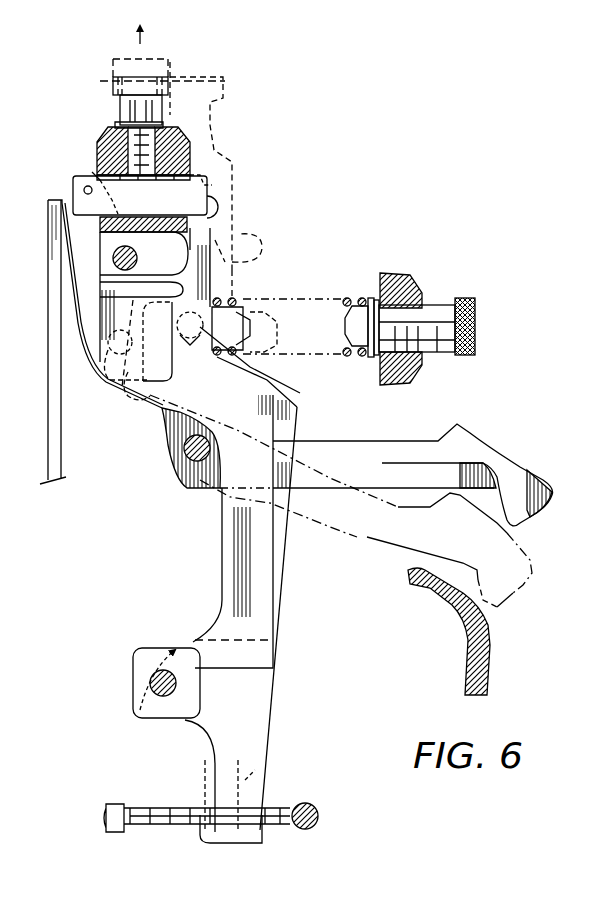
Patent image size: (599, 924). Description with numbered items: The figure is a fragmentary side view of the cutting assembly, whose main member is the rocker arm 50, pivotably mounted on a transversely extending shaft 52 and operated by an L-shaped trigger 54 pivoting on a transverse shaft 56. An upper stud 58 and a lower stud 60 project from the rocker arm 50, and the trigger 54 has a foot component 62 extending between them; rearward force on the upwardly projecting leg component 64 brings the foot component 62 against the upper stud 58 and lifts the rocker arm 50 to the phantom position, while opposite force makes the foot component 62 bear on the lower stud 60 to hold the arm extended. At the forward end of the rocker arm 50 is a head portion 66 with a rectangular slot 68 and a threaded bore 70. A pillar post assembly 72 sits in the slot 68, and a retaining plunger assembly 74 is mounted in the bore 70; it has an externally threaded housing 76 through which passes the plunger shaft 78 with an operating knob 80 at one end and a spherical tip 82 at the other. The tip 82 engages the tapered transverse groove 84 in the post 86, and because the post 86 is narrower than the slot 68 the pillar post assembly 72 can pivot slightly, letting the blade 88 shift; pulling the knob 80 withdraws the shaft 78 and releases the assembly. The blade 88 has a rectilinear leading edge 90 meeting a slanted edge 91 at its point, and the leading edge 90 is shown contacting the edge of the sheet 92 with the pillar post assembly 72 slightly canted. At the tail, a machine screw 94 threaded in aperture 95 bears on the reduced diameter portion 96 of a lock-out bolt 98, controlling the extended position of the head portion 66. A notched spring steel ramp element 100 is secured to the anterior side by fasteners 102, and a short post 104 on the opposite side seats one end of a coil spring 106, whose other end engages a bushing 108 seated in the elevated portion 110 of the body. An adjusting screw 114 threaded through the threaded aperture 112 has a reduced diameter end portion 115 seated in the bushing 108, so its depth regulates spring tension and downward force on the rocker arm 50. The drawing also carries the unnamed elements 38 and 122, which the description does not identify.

The pedal arm 38 is at (488, 648).
The rocker arm 50 is at (306, 720).
The transversely extending shaft 52 is at (150, 684).
The L-shaped trigger 54 is at (538, 562).
The transverse shaft 56 is at (172, 462).
The upper stud 58 is at (252, 376).
The lower stud 60 is at (112, 382).
The foot component 62 is at (164, 432).
The leg component 64 is at (350, 456).
The head portion 66 is at (202, 162).
The rectangular slot 68 is at (197, 176).
The threaded bore 70 is at (196, 140).
The pillar post assembly 72 is at (240, 206).
The retaining plunger assembly 74 is at (124, 58).
The externally threaded housing 76 is at (121, 112).
The plunger shaft 78 is at (105, 142).
The operating knob 80 is at (162, 76).
The spherical tip 82 is at (150, 200).
The tapered transverse groove 84 is at (120, 175).
The post 86 is at (222, 240).
The blade 88 is at (74, 186).
The rectilinear leading edge 90 is at (50, 208).
The slanted edge 91 is at (93, 176).
The sheet 92 is at (48, 422).
The machine screw 94 is at (148, 826).
The aperture 95 is at (260, 800).
The reduced diameter portion 96 is at (313, 826).
The lock-out bolt 98 is at (322, 814).
The spring steel ramp element 100 is at (76, 340).
The fasteners 102 is at (134, 398).
The short post 104 is at (244, 318).
The coil spring 106 is at (349, 297).
The bushing 108 is at (371, 298).
The elevated portion 110 is at (404, 274).
The threaded aperture 112 is at (428, 305).
The adjusting screw 114 is at (476, 327).
The reduced diameter end portion 115 is at (350, 357).
The pin 122 is at (114, 266).